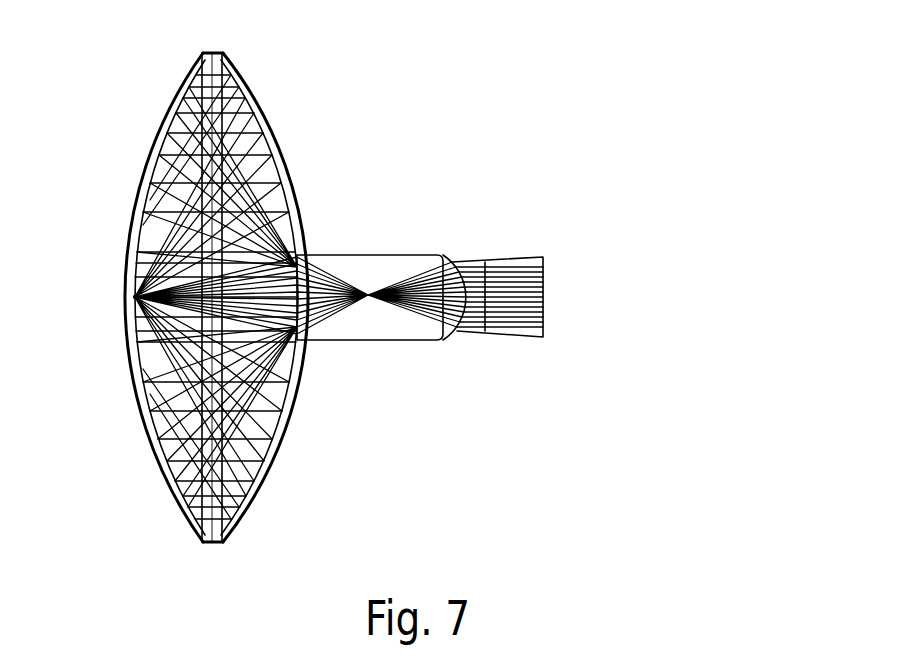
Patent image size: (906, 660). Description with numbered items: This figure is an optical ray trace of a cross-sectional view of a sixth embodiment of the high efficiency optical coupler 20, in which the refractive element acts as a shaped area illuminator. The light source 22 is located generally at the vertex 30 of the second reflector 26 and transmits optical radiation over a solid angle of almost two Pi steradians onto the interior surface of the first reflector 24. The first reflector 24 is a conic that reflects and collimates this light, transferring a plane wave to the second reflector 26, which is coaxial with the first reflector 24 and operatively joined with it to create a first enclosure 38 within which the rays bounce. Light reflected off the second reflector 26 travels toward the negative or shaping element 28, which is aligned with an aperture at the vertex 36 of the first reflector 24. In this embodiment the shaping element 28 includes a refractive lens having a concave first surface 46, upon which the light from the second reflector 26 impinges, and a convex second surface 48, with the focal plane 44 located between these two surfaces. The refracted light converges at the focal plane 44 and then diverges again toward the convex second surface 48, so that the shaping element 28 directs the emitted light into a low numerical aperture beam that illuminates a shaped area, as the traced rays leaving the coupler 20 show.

The high efficiency optical coupler 20 is at (497, 70).
The light source 22 is at (133, 298).
The first reflector 24 is at (276, 138).
The second reflector 26 is at (175, 92).
The negative element 28 is at (348, 262).
The vertex 30 is at (132, 300).
The vertex 36 is at (303, 295).
The first enclosure 38 is at (232, 105).
The focal plane 44 is at (368, 298).
The concave first surface 46 is at (183, 262).
The convex second surface 48 is at (457, 262).